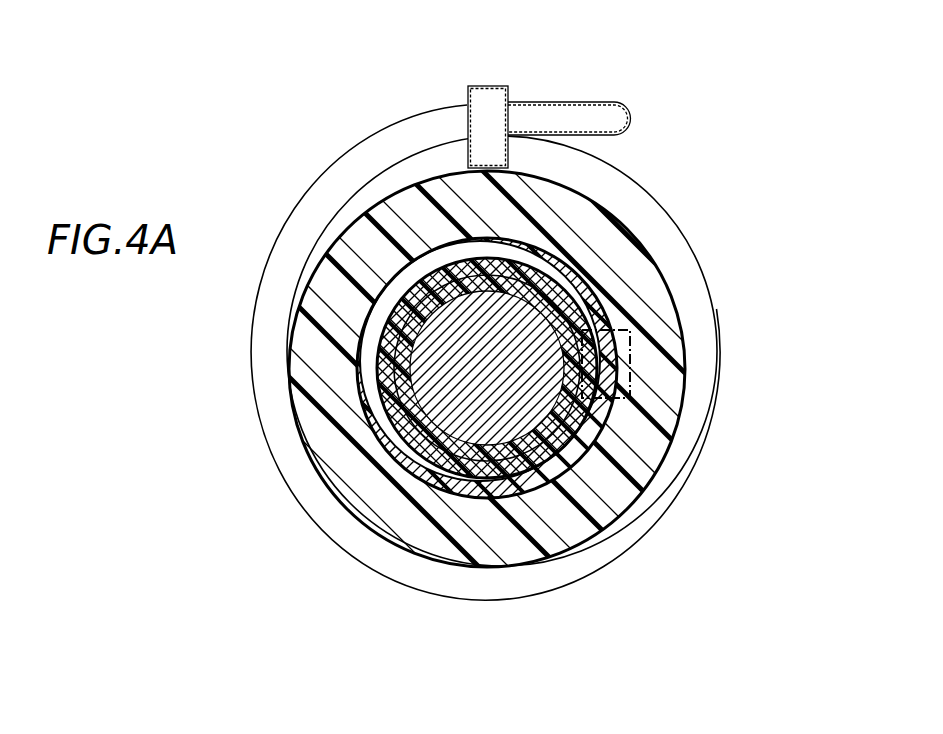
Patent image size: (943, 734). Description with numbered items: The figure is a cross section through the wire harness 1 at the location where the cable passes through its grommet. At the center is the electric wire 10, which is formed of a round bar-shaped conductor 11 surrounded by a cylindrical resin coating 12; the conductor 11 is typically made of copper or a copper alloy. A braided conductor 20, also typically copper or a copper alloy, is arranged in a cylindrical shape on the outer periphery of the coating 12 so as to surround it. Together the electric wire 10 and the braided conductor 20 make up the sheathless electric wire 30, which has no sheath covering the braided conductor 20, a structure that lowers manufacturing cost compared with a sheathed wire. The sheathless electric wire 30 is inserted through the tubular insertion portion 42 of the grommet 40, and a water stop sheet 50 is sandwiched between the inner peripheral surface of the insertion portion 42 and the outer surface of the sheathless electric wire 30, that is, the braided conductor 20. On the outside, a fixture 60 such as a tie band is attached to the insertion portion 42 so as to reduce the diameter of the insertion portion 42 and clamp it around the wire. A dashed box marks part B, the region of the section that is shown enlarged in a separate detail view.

The wire harness 1 is at (365, 119).
The electric wire 10 is at (483, 458).
The conductor 11 is at (433, 377).
The coating 12 is at (433, 433).
The braided conductor 20 is at (473, 467).
The sheathless electric wire 30 is at (491, 480).
The grommet 40 is at (471, 370).
The insertion portion 42 is at (633, 467).
The water stop sheet 50 is at (536, 478).
The fixture 60 is at (615, 115).
The part B is at (631, 355).